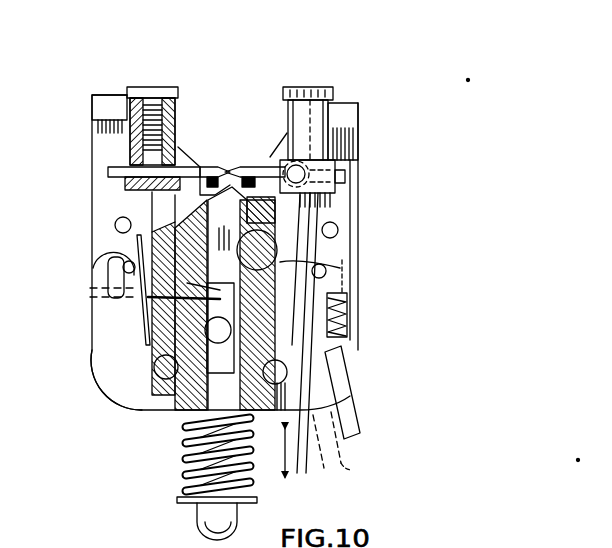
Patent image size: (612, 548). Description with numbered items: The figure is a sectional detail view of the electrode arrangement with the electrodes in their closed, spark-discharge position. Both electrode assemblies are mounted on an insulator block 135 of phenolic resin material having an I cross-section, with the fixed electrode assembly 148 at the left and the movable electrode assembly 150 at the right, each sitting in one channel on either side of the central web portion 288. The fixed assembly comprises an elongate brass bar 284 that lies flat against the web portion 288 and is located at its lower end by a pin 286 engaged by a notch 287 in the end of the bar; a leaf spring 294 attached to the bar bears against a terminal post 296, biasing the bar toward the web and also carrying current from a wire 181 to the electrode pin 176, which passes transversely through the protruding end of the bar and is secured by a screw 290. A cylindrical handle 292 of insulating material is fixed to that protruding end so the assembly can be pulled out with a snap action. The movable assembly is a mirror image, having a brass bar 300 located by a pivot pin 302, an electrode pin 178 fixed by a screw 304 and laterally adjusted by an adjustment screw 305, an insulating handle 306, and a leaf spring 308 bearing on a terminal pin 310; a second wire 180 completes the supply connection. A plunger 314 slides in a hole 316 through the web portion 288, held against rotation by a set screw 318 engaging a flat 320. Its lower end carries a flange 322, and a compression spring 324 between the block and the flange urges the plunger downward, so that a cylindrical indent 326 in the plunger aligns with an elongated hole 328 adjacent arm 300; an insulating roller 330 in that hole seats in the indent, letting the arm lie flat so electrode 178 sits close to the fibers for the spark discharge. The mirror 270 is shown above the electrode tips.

The insulator block 135 is at (124, 400).
The fixed electrode assembly 148 is at (139, 50).
The movable electrode assembly 150 is at (372, 82).
The electrode pin 176 is at (202, 170).
The electrode pin 178 is at (247, 168).
The wire 180 is at (352, 470).
The wire 181 is at (360, 430).
The mirror 270 is at (223, 168).
The elongate brass bar 284 is at (152, 333).
The pin 286 is at (155, 372).
The notch 287 is at (140, 385).
The central web portion 288 is at (173, 218).
The screw 290 is at (158, 112).
The cylindrical handle 292 is at (125, 90).
The leaf spring 294 is at (136, 240).
The terminal post 296 is at (105, 262).
The elongate brass bar 300 is at (287, 204).
The pivot pin 302 is at (313, 457).
The screw 304 is at (313, 90).
The adjustment screw 305 is at (345, 162).
The insulating handle 306 is at (290, 87).
The leaf spring 308 is at (278, 255).
The terminal pin 310 is at (325, 274).
The plunger 314 is at (220, 403).
The hole 316 is at (187, 415).
The set screw 318 is at (152, 367).
The flat 320 is at (160, 312).
The flange 322 is at (185, 504).
The compression spring 324 is at (182, 478).
The cylindrical indent 326 is at (340, 268).
The elongated hole 328 is at (338, 238).
The roller 330 is at (350, 325).